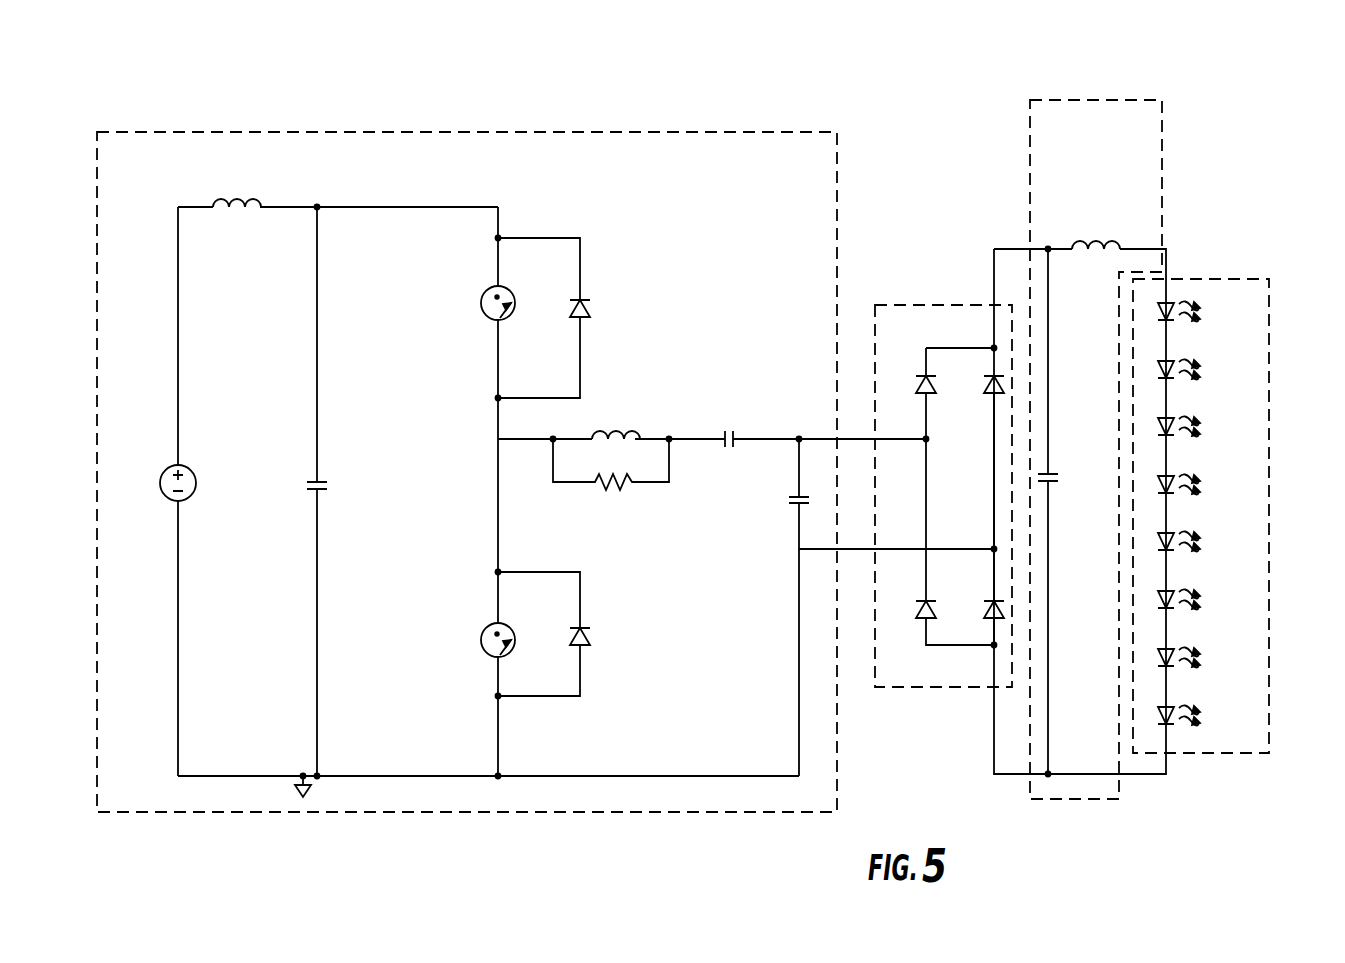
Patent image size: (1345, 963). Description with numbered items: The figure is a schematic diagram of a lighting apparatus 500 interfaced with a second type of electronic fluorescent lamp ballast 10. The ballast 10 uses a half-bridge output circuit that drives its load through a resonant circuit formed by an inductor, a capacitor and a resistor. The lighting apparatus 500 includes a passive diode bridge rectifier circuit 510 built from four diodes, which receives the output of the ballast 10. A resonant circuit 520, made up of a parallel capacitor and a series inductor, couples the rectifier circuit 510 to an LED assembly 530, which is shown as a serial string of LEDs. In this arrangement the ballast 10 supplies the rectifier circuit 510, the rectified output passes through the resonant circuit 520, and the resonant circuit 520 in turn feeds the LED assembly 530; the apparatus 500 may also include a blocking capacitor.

The lighting apparatus 500 is at (1243, 78).
The electronic ballast 10 is at (665, 132).
The passive diode bridge rectifier circuit 510 is at (940, 305).
The resonant circuit 520 is at (1162, 170).
The LED assembly 530 is at (1270, 345).